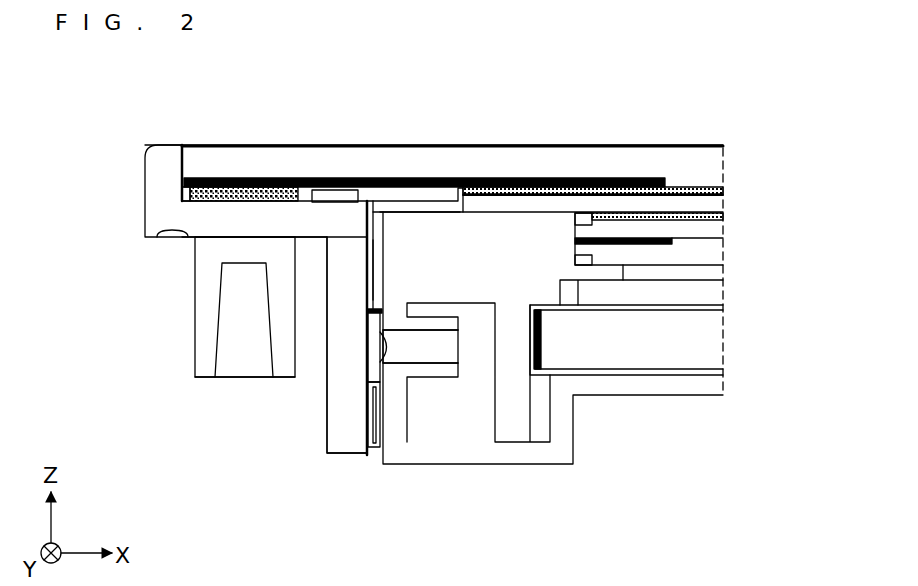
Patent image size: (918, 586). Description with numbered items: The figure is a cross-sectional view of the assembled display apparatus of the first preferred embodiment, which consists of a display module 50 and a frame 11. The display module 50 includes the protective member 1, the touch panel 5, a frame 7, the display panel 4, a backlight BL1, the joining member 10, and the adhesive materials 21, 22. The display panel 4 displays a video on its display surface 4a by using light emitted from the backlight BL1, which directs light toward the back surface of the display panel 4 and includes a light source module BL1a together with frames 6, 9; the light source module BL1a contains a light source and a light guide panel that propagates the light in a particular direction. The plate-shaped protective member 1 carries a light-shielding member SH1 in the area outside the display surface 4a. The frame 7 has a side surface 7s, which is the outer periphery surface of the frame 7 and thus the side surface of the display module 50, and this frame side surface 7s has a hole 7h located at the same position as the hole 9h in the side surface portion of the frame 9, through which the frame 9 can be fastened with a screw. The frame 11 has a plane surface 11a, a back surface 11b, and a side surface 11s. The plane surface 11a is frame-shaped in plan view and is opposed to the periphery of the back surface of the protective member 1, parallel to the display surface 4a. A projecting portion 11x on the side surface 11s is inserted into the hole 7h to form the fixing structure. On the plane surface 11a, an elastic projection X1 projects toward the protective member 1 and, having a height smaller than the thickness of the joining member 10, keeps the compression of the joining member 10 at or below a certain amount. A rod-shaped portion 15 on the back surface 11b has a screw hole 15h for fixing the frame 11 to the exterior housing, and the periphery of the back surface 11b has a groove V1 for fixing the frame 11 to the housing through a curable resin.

The protective member 1 is at (720, 155).
The display panel 4 is at (730, 217).
The display surface 4a is at (725, 240).
The touch panel 5 is at (722, 202).
The frame 6 is at (612, 272).
The frame 7 is at (428, 201).
The side surface 7s is at (375, 263).
The hole 7h is at (375, 450).
The frame 9 is at (705, 387).
The hole 9h is at (463, 330).
The joining member 10 is at (182, 190).
The frame 11 is at (157, 145).
The plane surface 11a is at (307, 206).
The back surface 11b is at (218, 232).
The side surface 11s is at (365, 420).
The projecting portion 11x is at (396, 352).
The rod-shaped portion 15 is at (195, 367).
The hole 15h is at (240, 380).
The adhesive material 21 is at (727, 188).
The adhesive material 22 is at (723, 217).
The display module 50 is at (694, 144).
The light-shielding member SH1 is at (604, 177).
The projection X1 is at (340, 190).
The groove V1 is at (172, 243).
The backlight BL1 is at (797, 260).
The light source module BL1a is at (728, 280).